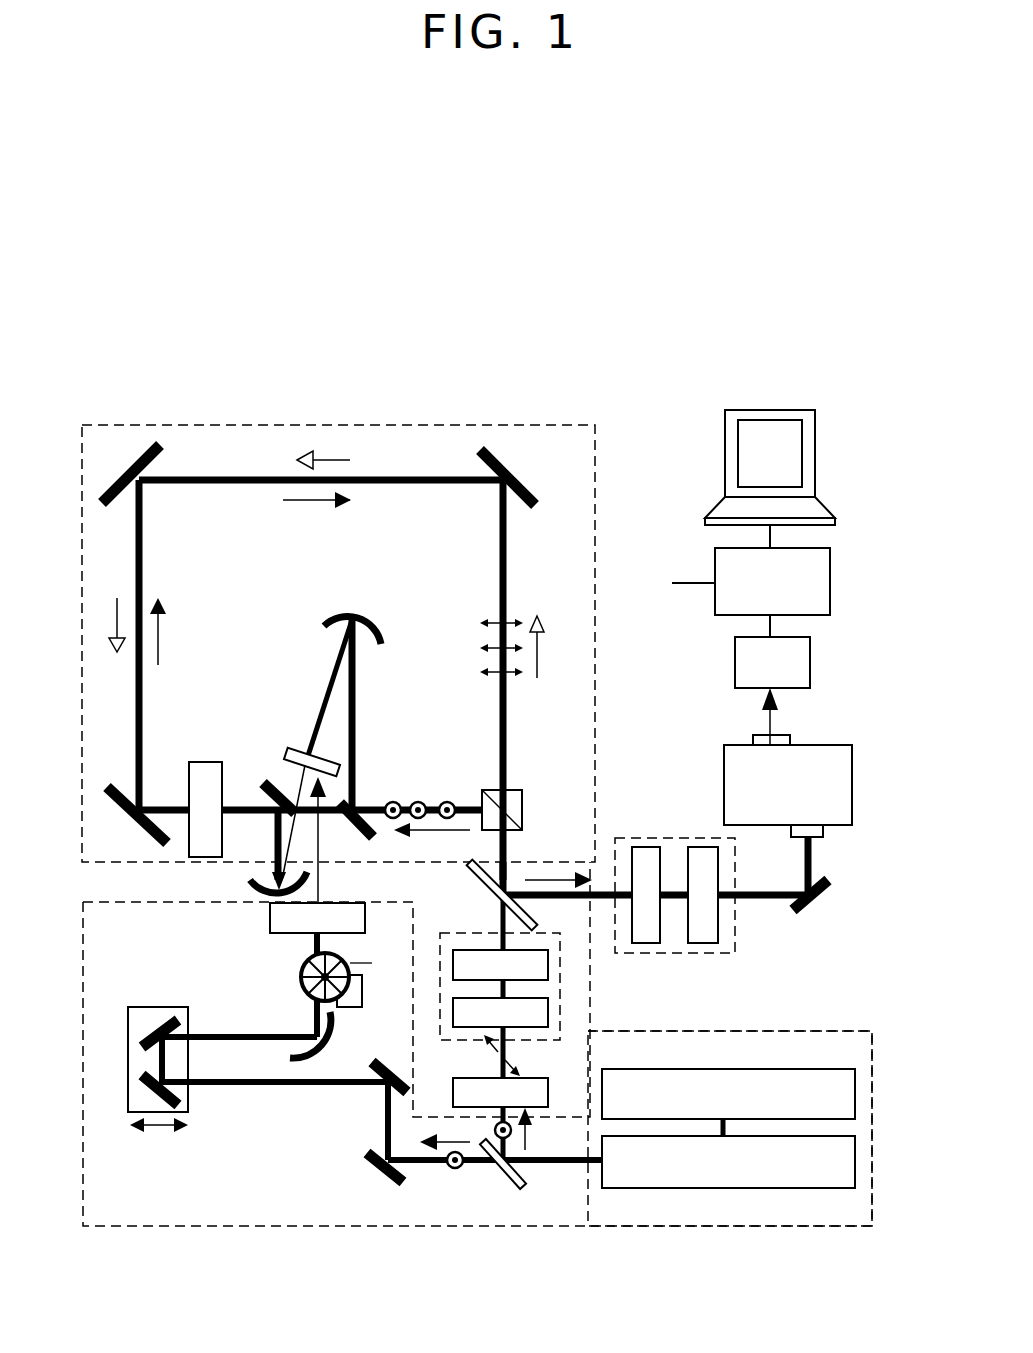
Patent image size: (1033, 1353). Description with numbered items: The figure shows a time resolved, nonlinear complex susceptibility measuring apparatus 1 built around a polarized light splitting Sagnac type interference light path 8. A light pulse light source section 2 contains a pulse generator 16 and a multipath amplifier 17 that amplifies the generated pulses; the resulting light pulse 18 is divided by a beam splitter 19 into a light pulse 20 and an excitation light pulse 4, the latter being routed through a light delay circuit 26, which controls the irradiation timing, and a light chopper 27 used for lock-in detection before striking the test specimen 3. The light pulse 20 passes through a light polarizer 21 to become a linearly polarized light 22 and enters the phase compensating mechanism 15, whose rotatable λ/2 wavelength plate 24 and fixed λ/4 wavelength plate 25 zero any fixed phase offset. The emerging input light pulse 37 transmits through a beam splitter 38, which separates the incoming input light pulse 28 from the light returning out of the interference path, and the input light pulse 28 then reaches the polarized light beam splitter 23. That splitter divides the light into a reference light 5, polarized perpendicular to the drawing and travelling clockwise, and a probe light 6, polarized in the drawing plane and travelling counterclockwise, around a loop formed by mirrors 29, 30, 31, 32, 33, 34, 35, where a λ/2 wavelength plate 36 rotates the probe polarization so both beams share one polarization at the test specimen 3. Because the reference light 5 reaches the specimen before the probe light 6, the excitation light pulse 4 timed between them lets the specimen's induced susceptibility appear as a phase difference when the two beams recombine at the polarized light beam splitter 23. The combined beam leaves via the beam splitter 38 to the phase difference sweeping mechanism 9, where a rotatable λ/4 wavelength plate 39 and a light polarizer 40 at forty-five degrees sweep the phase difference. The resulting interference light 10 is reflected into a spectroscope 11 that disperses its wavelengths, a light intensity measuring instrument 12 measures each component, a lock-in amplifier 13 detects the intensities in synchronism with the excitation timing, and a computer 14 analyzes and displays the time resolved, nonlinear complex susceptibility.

The time resolved nonlinear complex susceptibility measuring apparatus 1 is at (384, 291).
The light pulse light source section 2 is at (845, 1031).
The test specimen 3 is at (300, 752).
The excitation light pulse 4 is at (320, 898).
The reference light 5 is at (315, 502).
The probe light 6 is at (332, 460).
The polarized light splitting Sagnac type interference light path 8 is at (418, 478).
The phase difference sweeping mechanism 9 is at (738, 952).
The interference light 10 is at (762, 893).
The spectroscope 11 is at (845, 783).
The light intensity measuring instrument 12 is at (806, 668).
The lock-in amplifier 13 is at (820, 590).
The computer 14 is at (808, 457).
The phase compensating mechanism 15 is at (560, 985).
The pulse generator 16 is at (855, 1095).
The multipath amplifier 17 is at (855, 1165).
The light pulse 18 is at (555, 1163).
The beam splitter 19 is at (512, 1182).
The light pulse 20 is at (527, 1140).
The light polarizer 21 is at (530, 1092).
The linearly polarized light 22 is at (503, 1058).
The polarized light beam splitter 23 is at (512, 795).
The λ/2 wavelength plate 24 is at (548, 1013).
The λ/4 wavelength plate 25 is at (548, 965).
The light delay circuit 26 is at (158, 1015).
The light chopper 27 is at (300, 977).
The input light pulse 28 is at (508, 848).
The mirror 29 is at (504, 464).
The mirror 30 is at (127, 492).
The mirror 31 is at (112, 800).
The mirror 32 is at (272, 783).
The mirror 33 is at (262, 893).
The mirror 34 is at (372, 625).
The mirror 35 is at (352, 822).
The λ/2 wavelength plate 36 is at (200, 765).
The input light pulse 37 is at (498, 918).
The beam splitter 38 is at (472, 880).
The λ/4 wavelength plate 39 is at (642, 940).
The light polarizer 40 is at (698, 940).